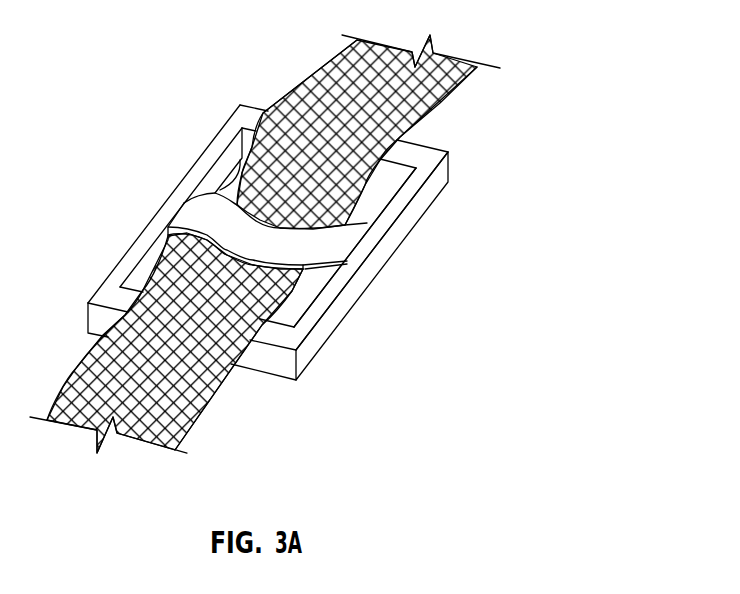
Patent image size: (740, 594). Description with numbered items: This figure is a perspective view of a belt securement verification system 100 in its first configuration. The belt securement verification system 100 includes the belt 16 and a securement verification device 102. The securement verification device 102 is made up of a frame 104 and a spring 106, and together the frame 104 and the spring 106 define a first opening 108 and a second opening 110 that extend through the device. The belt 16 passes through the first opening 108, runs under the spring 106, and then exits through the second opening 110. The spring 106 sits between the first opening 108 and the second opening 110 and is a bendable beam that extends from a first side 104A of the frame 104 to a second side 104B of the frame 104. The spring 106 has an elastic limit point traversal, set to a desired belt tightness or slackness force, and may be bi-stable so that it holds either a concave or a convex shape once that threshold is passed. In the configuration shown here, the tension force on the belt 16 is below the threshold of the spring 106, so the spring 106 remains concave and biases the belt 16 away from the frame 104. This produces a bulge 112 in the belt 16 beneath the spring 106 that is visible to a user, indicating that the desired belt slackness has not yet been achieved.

The belt securement verification system 100 is at (512, 40).
The belt 16 is at (438, 100).
The securement verification device 102 is at (452, 209).
The frame 104 is at (395, 208).
The first side of the frame 104A is at (365, 247).
The second side of the frame 104B is at (165, 213).
The spring 106 is at (189, 197).
The first opening 108 is at (238, 160).
The second opening 110 is at (160, 263).
The bulge 112 is at (262, 295).